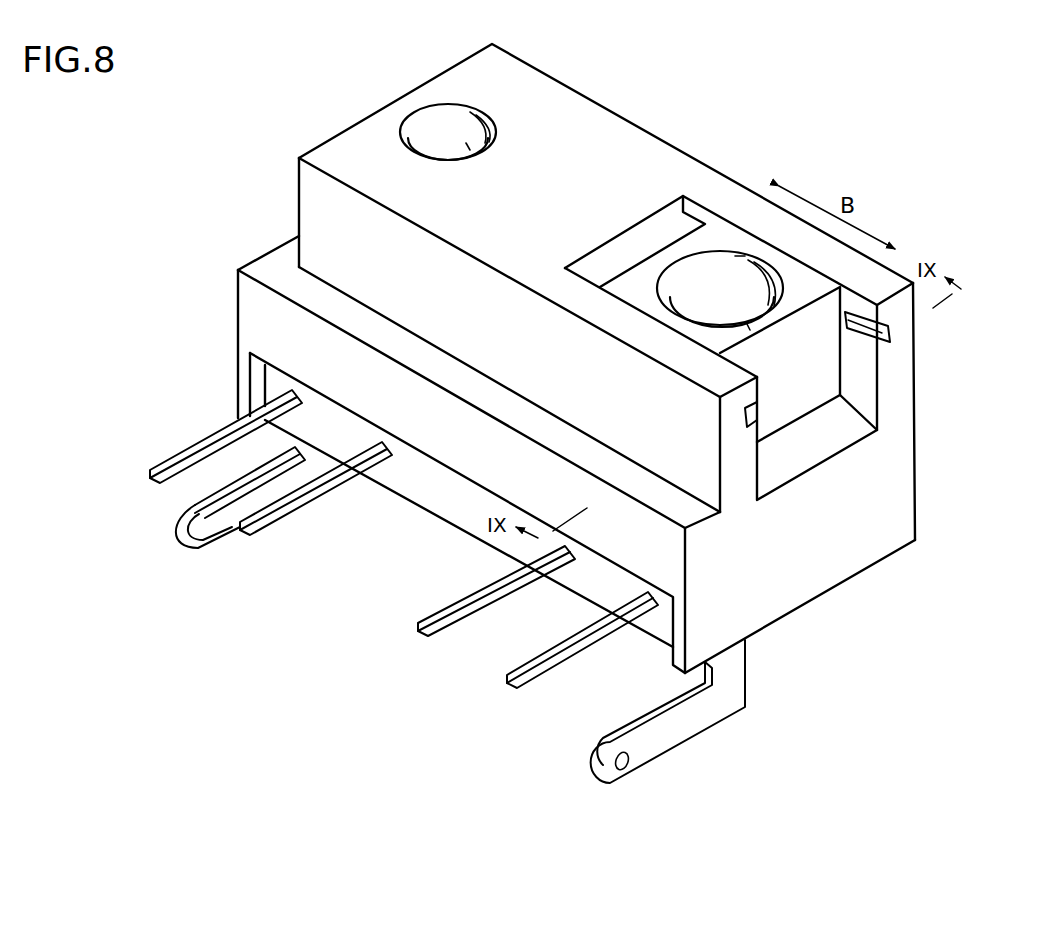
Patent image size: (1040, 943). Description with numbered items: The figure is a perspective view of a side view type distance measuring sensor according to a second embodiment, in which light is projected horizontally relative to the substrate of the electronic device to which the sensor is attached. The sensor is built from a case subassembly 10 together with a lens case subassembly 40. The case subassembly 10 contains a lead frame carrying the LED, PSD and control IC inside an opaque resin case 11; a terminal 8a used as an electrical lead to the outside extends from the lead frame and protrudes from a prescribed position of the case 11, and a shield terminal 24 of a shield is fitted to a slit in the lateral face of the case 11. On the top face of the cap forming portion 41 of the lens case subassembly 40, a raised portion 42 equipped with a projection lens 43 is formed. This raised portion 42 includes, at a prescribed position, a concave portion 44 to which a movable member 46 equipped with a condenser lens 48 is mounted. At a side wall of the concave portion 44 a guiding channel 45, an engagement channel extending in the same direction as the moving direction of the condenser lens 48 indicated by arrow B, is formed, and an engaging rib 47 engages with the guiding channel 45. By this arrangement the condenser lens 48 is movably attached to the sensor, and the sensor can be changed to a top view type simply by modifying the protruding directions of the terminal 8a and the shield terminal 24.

The lens case subassembly 40 is at (632, 100).
The cap forming portion 41 is at (277, 270).
The raised portion 42 is at (553, 108).
The projection lens 43 is at (440, 130).
The concave portion 44 is at (810, 427).
The guiding channel 45 is at (884, 340).
The movable member 46 is at (725, 236).
The engaging rib 47 is at (853, 330).
The condenser lens 48 is at (703, 280).
The case subassembly 10 is at (407, 582).
The case 11 is at (420, 479).
The shield terminal 24 is at (697, 717).
The terminal 8a is at (518, 664).